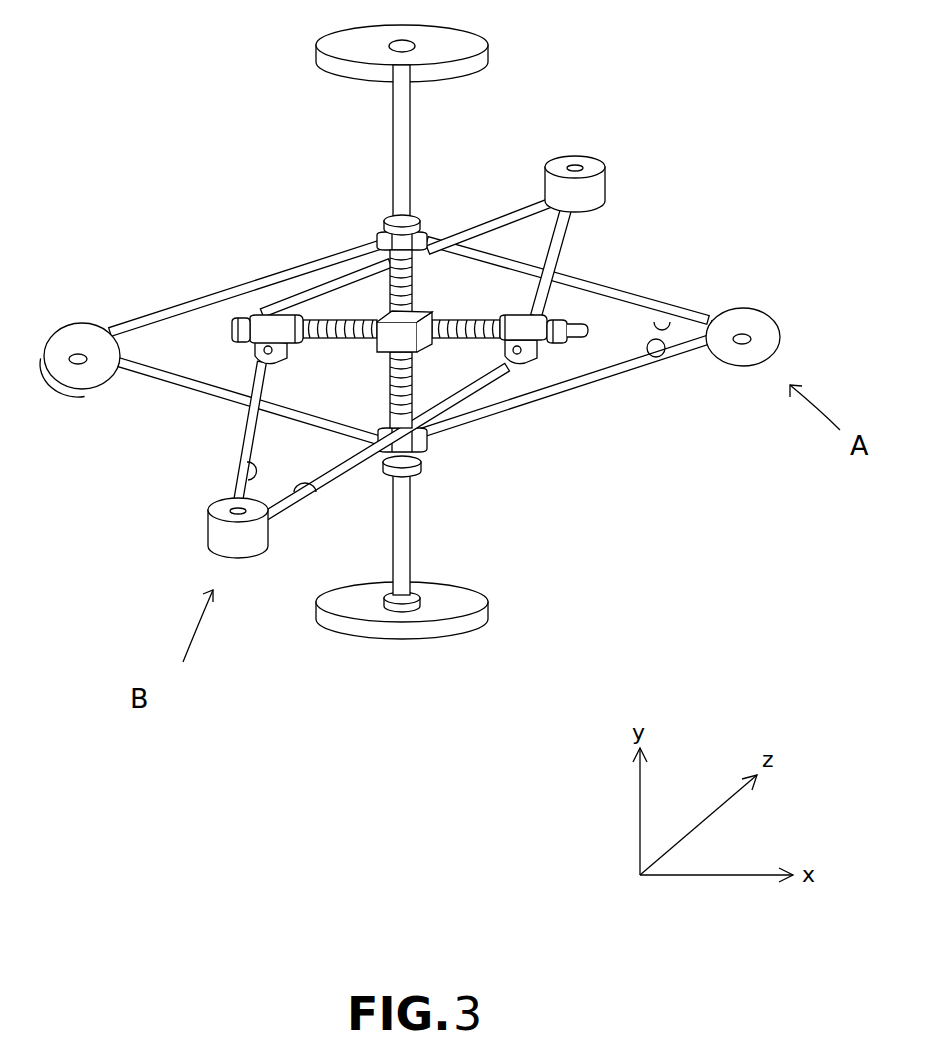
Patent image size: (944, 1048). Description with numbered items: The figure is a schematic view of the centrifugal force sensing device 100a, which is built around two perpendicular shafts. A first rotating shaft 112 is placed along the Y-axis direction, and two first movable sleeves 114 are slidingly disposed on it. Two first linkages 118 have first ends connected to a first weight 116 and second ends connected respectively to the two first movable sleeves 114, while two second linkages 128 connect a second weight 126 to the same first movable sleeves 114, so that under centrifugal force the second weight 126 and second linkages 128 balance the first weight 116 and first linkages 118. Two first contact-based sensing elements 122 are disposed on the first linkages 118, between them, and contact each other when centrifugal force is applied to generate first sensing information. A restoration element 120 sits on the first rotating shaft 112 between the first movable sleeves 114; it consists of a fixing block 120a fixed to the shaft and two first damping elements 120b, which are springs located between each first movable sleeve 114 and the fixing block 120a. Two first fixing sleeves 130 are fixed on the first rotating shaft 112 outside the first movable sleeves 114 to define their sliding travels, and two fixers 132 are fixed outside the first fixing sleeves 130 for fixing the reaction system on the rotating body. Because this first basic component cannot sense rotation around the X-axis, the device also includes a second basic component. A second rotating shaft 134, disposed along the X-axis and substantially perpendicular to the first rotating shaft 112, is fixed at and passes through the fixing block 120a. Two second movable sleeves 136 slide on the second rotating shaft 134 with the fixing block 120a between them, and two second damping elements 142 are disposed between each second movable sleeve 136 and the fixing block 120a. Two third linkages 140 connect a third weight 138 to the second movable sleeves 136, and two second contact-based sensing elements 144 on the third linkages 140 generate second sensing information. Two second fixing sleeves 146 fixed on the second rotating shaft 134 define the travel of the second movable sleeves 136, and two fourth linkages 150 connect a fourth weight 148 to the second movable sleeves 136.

The centrifugal force sensing device 100a is at (780, 607).
The first rotating shaft 112 is at (407, 113).
The first movable sleeves 114 is at (422, 227).
The first weight 116 is at (777, 327).
The first linkages 118 is at (607, 293).
The restoration element 120 is at (479, 418).
The fixing block 120a is at (422, 352).
The first damping elements 120b is at (472, 340).
The first contact-based sensing elements 122 is at (660, 312).
The second weight 126 is at (62, 362).
The second linkages 128 is at (158, 317).
The first fixing sleeves 130 is at (386, 218).
The fixers 132 is at (455, 42).
The second rotating shaft 134 is at (590, 332).
The second movable sleeves 136 is at (267, 323).
The third weight 138 is at (220, 538).
The third linkages 140 is at (240, 482).
The second damping elements 142 is at (338, 340).
The second contact-based sensing elements 144 is at (245, 472).
The second fixing sleeves 146 is at (237, 320).
The fourth weight 148 is at (590, 165).
The fourth linkages 150 is at (527, 207).